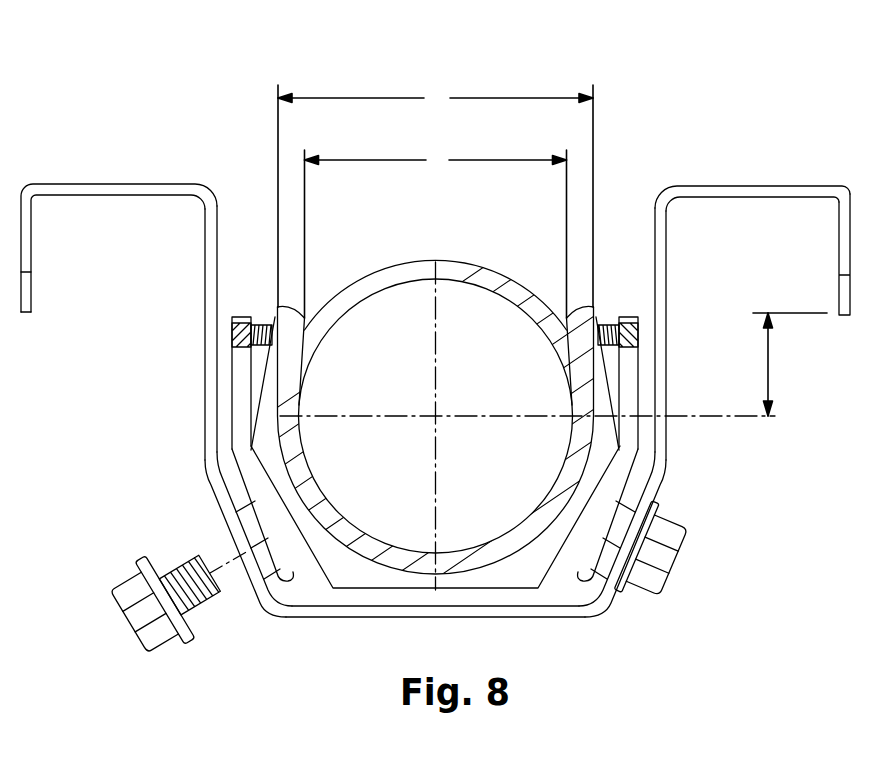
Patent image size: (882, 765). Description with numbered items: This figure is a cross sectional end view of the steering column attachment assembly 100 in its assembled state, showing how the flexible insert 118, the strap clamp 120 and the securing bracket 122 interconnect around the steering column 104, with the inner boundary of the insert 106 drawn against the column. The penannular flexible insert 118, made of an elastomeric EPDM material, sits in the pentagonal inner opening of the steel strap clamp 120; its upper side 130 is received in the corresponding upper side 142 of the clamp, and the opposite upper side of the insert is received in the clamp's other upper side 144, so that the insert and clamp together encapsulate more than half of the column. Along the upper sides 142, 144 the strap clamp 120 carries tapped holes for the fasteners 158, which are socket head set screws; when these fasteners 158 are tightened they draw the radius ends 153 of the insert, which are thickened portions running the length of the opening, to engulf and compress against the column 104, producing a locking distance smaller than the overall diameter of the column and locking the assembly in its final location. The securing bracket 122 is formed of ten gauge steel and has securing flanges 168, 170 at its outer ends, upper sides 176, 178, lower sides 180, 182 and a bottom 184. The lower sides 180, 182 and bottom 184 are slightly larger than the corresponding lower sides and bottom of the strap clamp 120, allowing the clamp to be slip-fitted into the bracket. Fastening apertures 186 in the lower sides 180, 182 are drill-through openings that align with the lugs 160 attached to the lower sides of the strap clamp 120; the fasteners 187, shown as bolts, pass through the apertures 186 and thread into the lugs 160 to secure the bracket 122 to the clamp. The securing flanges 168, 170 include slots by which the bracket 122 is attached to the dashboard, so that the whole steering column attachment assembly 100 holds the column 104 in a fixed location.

The steering column attachment assembly 100 is at (656, 135).
The steering column 104 is at (440, 262).
The pipe bore 106 is at (383, 278).
The penannular flexible insert 118 is at (345, 572).
The strap clamp 120 is at (238, 420).
The securing bracket 122 is at (851, 207).
The upper side 130 is at (262, 372).
The upper side 142 is at (633, 402).
The upper side 144 is at (240, 433).
The radius ends 153 is at (310, 322).
The fasteners 158 is at (233, 337).
The lugs 160 is at (282, 588).
The securing flange 168 is at (143, 190).
The securing flange 170 is at (738, 193).
The upper side 176 is at (666, 258).
The upper side 178 is at (205, 262).
The lower side 180 is at (606, 612).
The lower side 182 is at (195, 482).
The bottom 184 is at (478, 620).
The fastening apertures 186 is at (2, 556).
The fasteners 187 is at (146, 633).